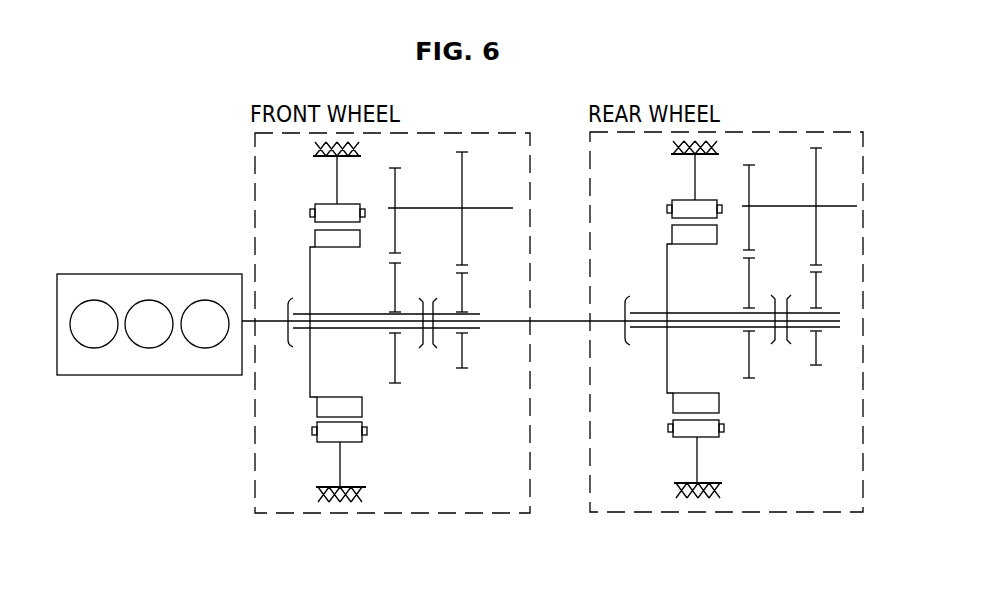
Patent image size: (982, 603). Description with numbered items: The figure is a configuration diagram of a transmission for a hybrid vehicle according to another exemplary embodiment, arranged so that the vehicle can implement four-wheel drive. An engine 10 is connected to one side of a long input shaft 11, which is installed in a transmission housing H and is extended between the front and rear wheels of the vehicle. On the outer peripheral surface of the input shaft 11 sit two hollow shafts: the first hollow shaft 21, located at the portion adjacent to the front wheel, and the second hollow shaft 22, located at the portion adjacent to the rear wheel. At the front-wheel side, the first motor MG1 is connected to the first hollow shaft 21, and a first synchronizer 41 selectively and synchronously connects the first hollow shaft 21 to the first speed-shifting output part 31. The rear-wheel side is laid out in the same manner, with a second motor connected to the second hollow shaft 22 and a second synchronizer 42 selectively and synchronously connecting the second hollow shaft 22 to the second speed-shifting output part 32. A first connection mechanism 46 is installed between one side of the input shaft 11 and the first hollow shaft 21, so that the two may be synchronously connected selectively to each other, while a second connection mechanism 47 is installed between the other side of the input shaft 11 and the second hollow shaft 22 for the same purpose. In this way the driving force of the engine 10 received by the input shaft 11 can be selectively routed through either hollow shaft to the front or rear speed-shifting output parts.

The engine 10 is at (148, 274).
The input shaft 11 is at (515, 323).
The first hollow shaft 21 is at (357, 331).
The second hollow shaft 22 is at (651, 330).
The first speed-shifting output part 31 is at (444, 165).
The second speed-shifting output part 32 is at (783, 163).
The first synchronizer 41 is at (429, 355).
The second synchronizer 42 is at (781, 355).
The first connection mechanism 46 is at (287, 358).
The second connection mechanism 47 is at (622, 357).
The first motor MG1 is at (292, 234).
The transmission housing H is at (312, 147).